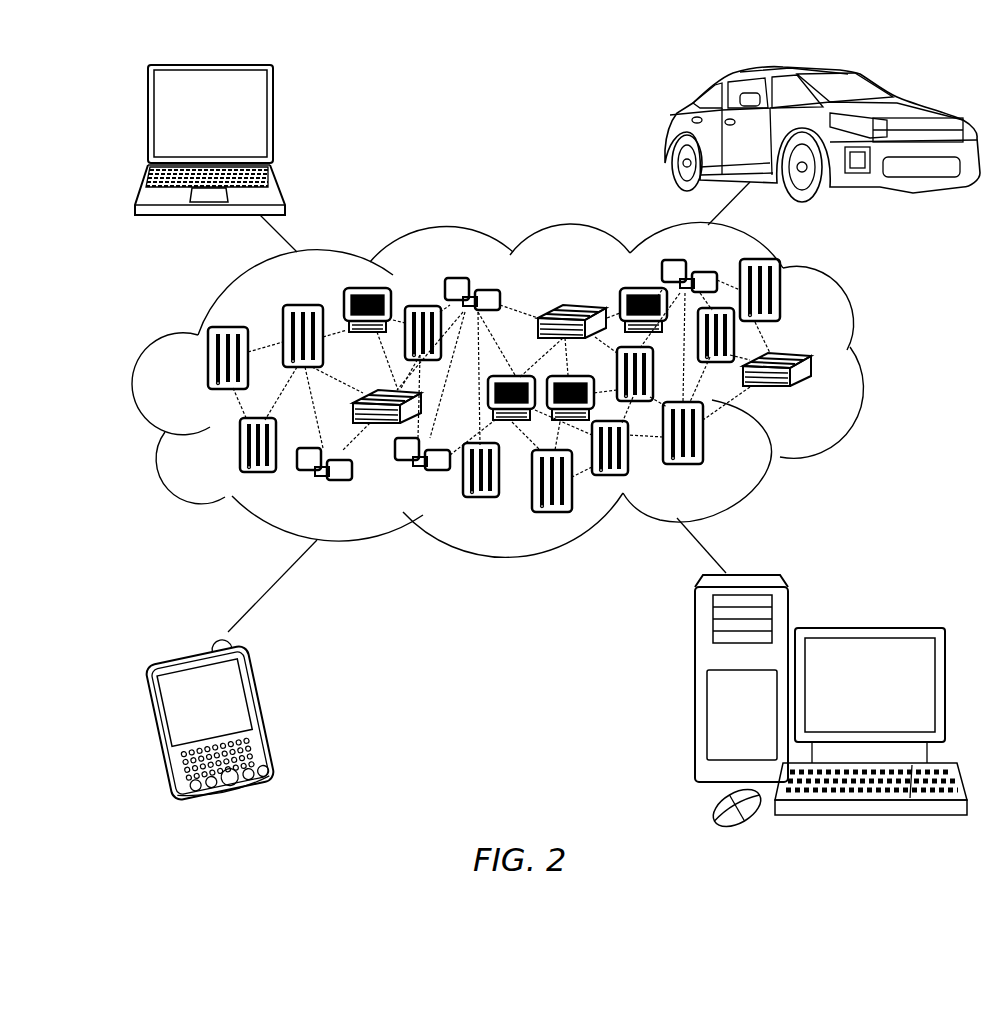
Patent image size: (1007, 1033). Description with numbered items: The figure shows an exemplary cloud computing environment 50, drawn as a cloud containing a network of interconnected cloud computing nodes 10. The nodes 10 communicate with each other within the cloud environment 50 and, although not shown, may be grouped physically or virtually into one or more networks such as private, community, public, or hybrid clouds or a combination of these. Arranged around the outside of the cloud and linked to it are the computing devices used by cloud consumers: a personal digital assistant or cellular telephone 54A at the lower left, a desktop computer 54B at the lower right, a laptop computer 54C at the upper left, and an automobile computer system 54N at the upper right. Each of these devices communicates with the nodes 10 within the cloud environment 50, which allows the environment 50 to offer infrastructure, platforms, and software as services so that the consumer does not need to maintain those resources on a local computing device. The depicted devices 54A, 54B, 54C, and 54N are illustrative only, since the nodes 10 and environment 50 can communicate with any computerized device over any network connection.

The cloud computing node 10 is at (814, 392).
The cloud computing environment 50 is at (867, 368).
The personal digital assistant or cellular telephone 54A is at (263, 713).
The desktop computer 54B is at (865, 625).
The laptop computer 54C is at (275, 120).
The automobile computer system 54N is at (666, 136).